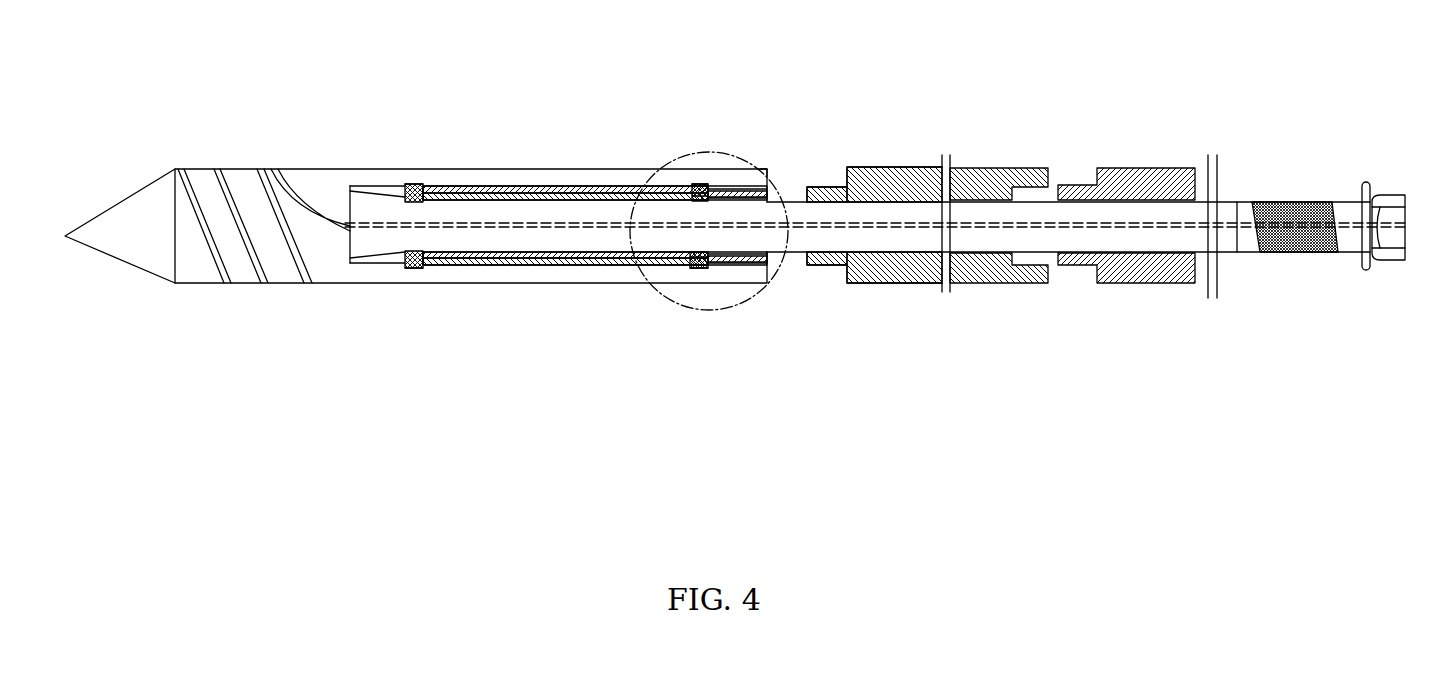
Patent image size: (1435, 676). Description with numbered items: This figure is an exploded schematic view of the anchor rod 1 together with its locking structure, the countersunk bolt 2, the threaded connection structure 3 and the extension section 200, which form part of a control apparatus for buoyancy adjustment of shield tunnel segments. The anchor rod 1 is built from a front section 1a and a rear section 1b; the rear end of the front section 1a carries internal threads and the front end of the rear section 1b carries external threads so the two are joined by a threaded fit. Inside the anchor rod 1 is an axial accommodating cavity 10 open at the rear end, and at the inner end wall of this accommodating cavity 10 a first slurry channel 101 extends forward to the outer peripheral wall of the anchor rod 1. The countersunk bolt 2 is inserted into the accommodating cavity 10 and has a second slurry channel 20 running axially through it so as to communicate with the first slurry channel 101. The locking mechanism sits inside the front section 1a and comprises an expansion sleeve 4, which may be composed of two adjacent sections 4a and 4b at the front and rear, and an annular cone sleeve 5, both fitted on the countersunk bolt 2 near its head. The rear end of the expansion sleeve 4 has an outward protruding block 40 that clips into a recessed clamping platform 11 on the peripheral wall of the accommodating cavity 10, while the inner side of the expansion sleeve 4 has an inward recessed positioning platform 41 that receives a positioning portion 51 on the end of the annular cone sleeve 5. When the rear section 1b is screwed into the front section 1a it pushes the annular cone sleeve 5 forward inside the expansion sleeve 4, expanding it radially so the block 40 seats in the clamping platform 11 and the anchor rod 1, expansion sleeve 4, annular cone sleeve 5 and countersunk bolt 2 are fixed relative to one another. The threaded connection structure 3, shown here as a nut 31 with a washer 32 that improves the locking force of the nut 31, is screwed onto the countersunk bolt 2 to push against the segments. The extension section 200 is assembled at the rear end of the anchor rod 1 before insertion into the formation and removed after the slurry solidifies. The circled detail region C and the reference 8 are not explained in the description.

The anchor rod 1 is at (423, 70).
The front section 1a is at (372, 168).
The rear section 1b is at (978, 167).
The first slurry channel 101 is at (290, 185).
The countersunk bolt 2 is at (1310, 258).
The threaded connection structure 3 is at (1400, 146).
The nut 31 is at (1386, 196).
The washer 32 is at (1364, 183).
The expansion sleeve 4 is at (583, 126).
The front section of expansion sleeve 4a is at (531, 186).
The rear section of expansion sleeve 4b is at (578, 186).
The annular cone sleeve 5 is at (720, 197).
The positioning portion 51 is at (737, 190).
The housing corner 8 is at (735, 158).
The accommodating cavity 10 is at (619, 186).
The clamping platform 11 is at (412, 186).
The second slurry channel 20 is at (374, 230).
The block 40 is at (411, 202).
The positioning platform 41 is at (695, 200).
The extension section 200 is at (1147, 168).
The detail region C is at (700, 160).